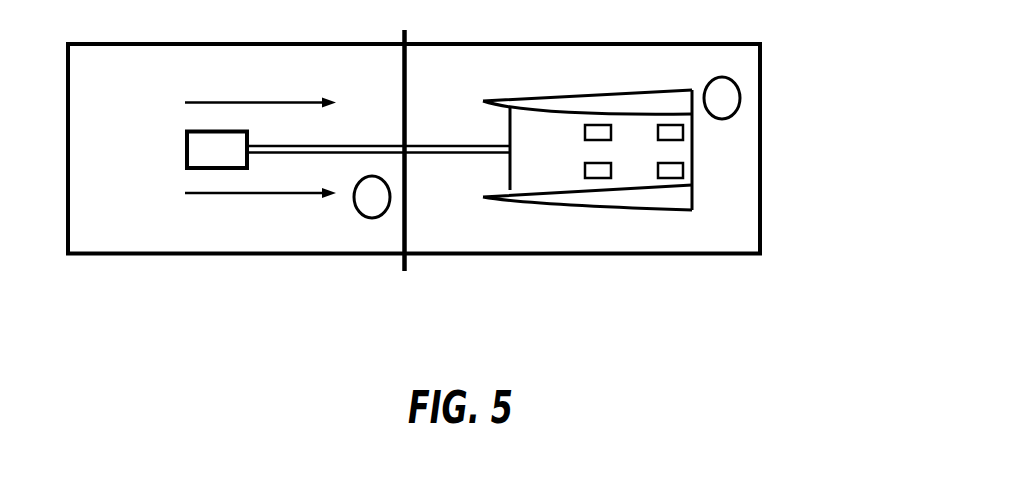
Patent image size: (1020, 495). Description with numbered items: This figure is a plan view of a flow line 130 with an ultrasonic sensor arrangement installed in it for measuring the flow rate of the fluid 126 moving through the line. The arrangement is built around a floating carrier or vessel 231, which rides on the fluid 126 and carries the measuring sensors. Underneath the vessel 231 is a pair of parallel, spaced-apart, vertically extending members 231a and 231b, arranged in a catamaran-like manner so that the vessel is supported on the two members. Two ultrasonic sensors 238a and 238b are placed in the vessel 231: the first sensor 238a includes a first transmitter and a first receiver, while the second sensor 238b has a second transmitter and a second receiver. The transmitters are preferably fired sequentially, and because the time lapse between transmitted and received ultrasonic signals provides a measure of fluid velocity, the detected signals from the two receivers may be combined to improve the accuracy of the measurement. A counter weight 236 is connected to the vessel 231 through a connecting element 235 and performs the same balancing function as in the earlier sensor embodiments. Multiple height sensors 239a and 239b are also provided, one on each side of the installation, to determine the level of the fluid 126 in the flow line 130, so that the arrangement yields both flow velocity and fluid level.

The fluid 126 is at (249, 123).
The flow line 130 is at (459, 149).
The floating carrier or vessel 231 is at (634, 156).
The vertically extending member 231a is at (557, 80).
The vertically extending member 231b is at (557, 221).
The connecting lead 235 is at (378, 131).
The counter weight 236 is at (165, 131).
The ultrasonic sensor 238a is at (617, 82).
The ultrasonic sensor 238b is at (689, 226).
The height sensor 239a is at (313, 215).
The height sensor 239b is at (784, 82).